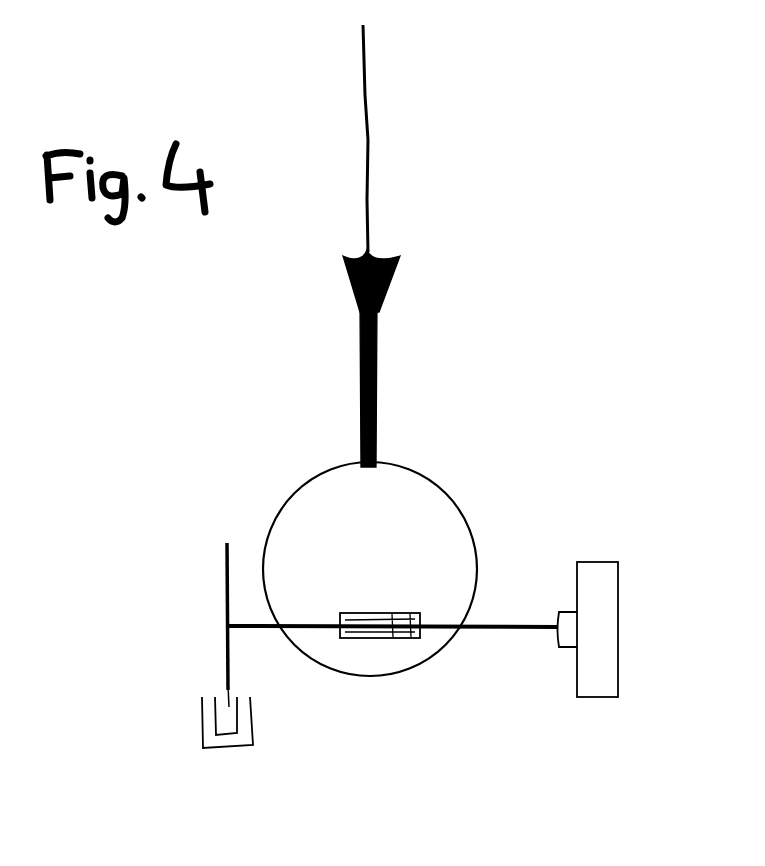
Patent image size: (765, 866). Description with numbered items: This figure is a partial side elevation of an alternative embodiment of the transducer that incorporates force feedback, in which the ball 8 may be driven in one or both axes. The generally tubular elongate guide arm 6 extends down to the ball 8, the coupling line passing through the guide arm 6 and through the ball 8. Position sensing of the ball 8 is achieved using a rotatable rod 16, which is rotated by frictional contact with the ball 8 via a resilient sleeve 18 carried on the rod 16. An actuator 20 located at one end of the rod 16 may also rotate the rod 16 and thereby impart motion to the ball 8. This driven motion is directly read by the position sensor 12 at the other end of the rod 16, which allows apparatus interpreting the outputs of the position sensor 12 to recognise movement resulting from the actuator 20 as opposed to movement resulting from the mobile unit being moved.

The guide arm 6 is at (376, 310).
The ball 8 is at (460, 508).
The position sensor 12 is at (224, 560).
The rotatable rod 16 is at (490, 626).
The resilient sleeve 18 is at (405, 637).
The actuator 20 is at (620, 591).